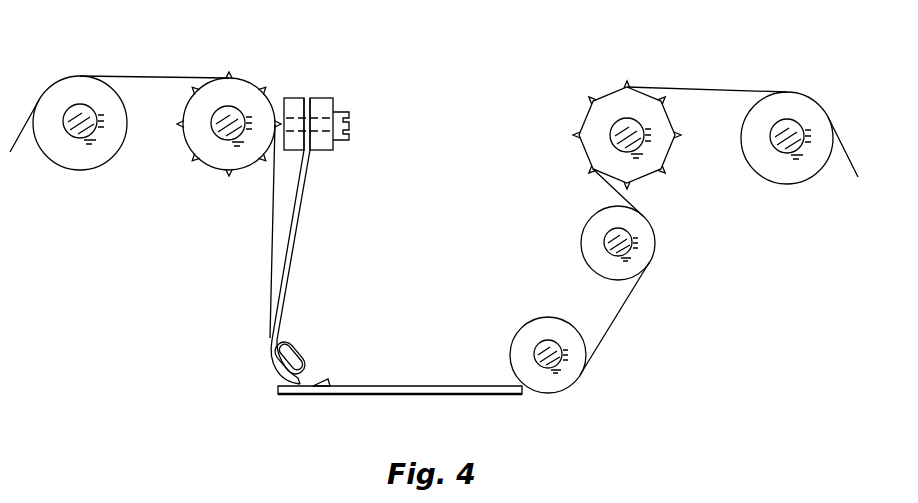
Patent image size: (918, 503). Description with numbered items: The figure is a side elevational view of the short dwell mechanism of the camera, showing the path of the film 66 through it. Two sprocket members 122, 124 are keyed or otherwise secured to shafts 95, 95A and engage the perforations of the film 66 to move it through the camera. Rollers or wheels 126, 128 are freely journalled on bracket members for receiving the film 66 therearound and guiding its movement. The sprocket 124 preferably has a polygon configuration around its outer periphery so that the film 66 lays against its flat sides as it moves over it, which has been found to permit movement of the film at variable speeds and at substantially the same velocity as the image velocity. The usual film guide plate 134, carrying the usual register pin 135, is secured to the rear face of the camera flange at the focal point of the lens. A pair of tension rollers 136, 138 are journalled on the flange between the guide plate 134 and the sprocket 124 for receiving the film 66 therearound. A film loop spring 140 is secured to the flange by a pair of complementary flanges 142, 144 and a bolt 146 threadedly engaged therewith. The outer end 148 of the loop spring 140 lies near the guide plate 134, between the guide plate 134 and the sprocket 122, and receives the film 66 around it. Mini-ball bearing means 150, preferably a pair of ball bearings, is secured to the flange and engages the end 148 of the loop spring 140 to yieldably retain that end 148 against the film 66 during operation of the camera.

The roller 126 is at (78, 87).
The shaft 95 is at (228, 117).
The sprocket member 122 is at (245, 90).
The complementary flange 144 is at (295, 102).
The complementary flange 142 is at (323, 107).
The bolt 146 is at (346, 118).
The film loop spring 140 is at (293, 260).
The outer end of loop spring 148 is at (275, 368).
The mini-ball bearing means 150 is at (302, 354).
The film guide plate 134 is at (350, 395).
The register pin 135 is at (328, 382).
The sprocket member 124 is at (620, 105).
The shaft 95A is at (636, 141).
The roller 128 is at (790, 102).
The tension roller 138 is at (643, 252).
The film 66 is at (623, 314).
The tension roller 136 is at (572, 372).